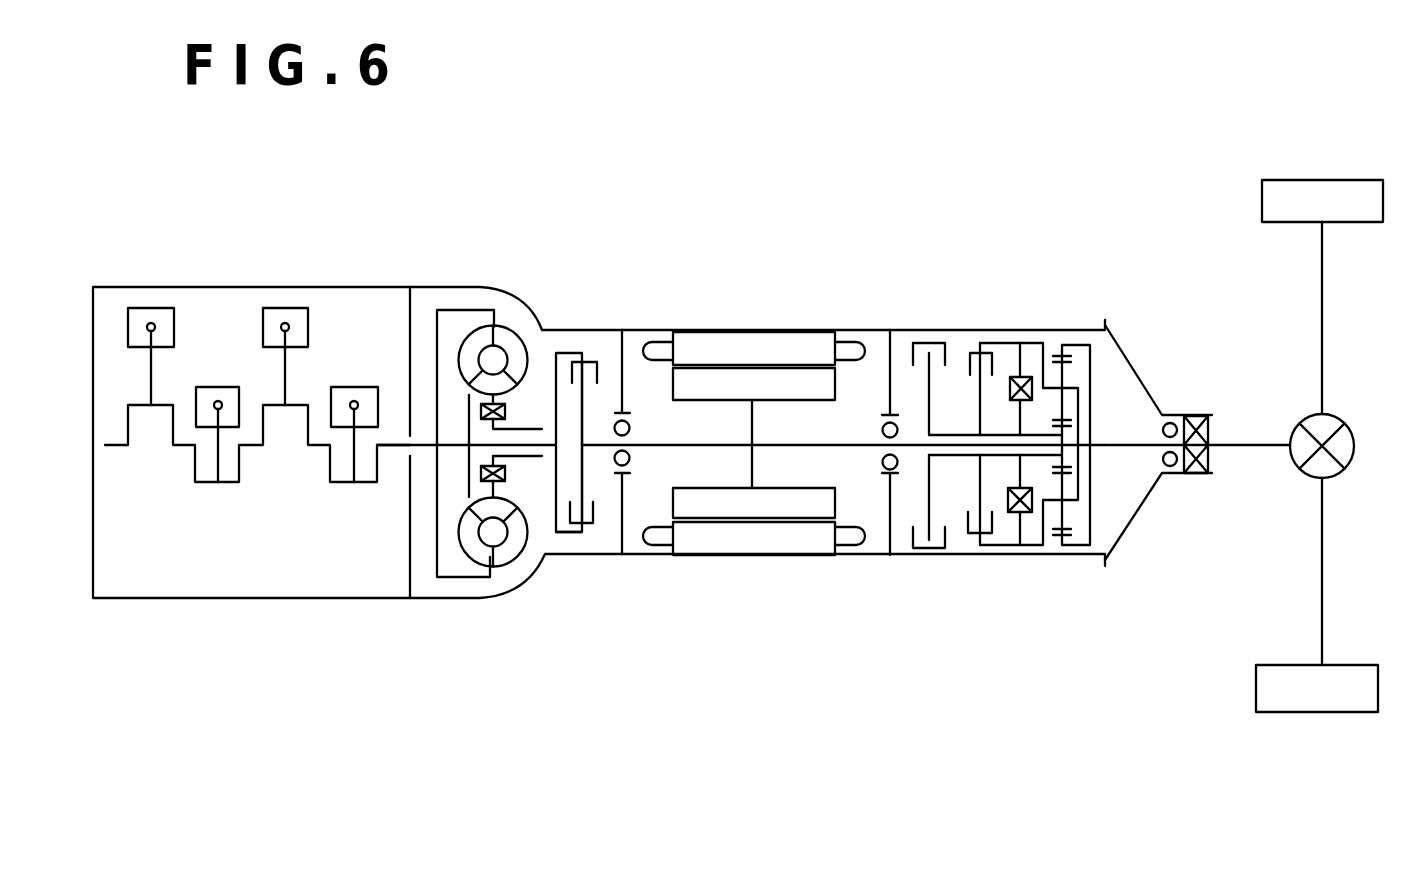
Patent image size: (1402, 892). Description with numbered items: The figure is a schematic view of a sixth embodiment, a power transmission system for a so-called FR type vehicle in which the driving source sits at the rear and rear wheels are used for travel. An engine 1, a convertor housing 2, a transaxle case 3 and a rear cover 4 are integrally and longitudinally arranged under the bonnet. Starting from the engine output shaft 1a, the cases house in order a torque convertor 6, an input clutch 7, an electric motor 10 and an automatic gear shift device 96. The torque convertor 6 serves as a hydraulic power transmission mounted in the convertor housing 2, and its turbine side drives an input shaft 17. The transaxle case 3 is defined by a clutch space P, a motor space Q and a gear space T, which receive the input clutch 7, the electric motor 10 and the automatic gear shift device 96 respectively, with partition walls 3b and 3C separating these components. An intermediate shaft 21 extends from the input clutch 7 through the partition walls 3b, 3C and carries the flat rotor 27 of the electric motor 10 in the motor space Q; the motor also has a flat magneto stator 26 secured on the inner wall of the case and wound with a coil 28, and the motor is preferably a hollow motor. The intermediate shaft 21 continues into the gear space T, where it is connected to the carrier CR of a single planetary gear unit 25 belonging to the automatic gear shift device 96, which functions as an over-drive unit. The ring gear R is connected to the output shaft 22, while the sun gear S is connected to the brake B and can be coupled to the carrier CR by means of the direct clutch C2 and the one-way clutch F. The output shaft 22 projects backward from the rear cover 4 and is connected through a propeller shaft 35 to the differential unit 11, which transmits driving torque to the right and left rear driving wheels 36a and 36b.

The engine 1 is at (343, 287).
The engine output shaft 1a is at (427, 450).
The convertor housing 2 is at (482, 287).
The torque convertor 6 is at (519, 327).
The input shaft 17 is at (520, 453).
The input clutch 7 is at (595, 342).
The clutch space P is at (573, 545).
The partition wall 3b is at (620, 535).
The intermediate shaft 21 is at (708, 447).
The flat magneto stator 26 is at (765, 342).
The flat rotor 27 is at (706, 380).
The transaxle case 3 is at (652, 342).
The coil 28 is at (857, 342).
The motor space Q is at (852, 507).
The electric motor 10 is at (815, 331).
The partition wall 3C is at (878, 528).
The brake B is at (918, 342).
The gear space T is at (953, 523).
The automatic gear shift device 96 is at (963, 330).
The direct clutch C2 is at (1000, 355).
The one-way clutch F is at (1023, 376).
The ring gear R is at (1057, 353).
The carrier CR is at (1078, 387).
The sun gear S is at (1068, 430).
The rear cover 4 is at (1138, 372).
The output shaft 22 is at (1133, 447).
The propeller shaft 35 is at (1252, 447).
The single planetary gear unit 25 is at (1053, 545).
The differential unit 11 is at (1302, 417).
The rear driving wheel 36b is at (1316, 190).
The rear driving wheel 36a is at (1270, 702).